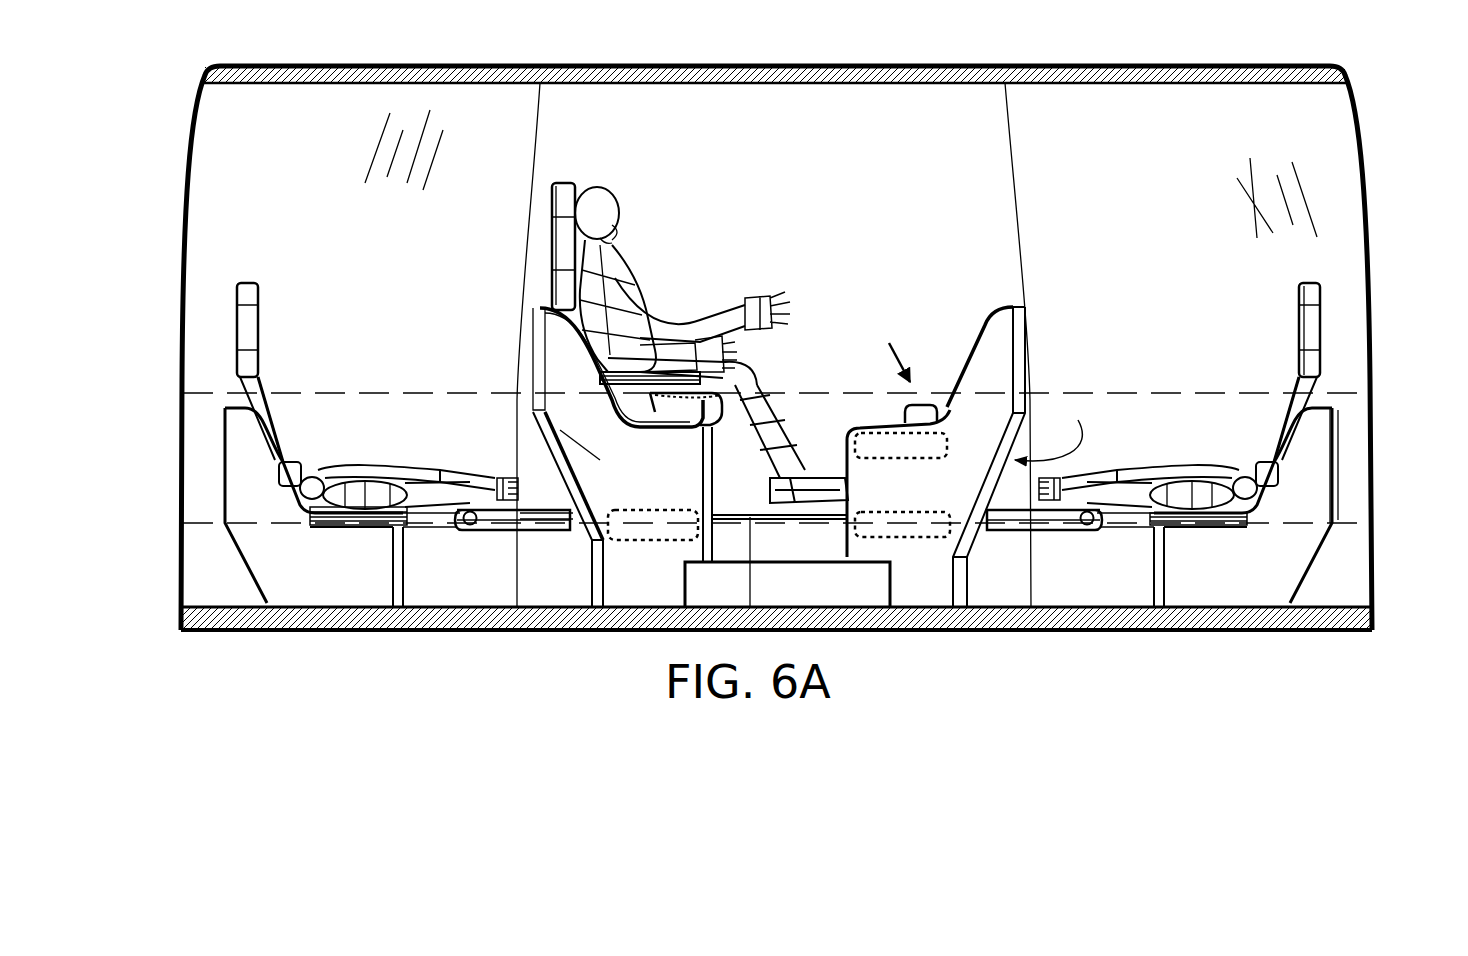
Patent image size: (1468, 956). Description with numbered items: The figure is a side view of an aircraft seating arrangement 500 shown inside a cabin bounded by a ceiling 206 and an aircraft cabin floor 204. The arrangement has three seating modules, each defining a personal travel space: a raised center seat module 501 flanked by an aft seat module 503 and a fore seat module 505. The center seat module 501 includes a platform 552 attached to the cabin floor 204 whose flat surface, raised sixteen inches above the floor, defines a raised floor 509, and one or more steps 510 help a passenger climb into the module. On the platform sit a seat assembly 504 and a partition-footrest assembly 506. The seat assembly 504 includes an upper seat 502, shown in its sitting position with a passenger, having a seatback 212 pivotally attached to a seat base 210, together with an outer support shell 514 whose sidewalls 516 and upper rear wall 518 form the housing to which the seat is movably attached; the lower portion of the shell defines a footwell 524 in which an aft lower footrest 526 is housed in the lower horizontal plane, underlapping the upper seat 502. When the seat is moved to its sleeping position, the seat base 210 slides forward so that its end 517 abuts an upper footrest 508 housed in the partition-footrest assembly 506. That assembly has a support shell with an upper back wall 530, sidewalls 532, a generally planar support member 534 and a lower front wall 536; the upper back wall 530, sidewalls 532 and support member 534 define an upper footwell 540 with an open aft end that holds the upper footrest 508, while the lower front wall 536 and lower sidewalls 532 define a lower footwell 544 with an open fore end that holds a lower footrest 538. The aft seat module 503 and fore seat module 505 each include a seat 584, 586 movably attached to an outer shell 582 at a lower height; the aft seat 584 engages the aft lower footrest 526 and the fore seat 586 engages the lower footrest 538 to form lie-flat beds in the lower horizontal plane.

The seating arrangement 500 is at (1043, 155).
The ceiling 206 is at (357, 83).
The aircraft cabin floor 204 is at (421, 603).
The raised center seat module 501 is at (758, 252).
The upper seat 502 is at (545, 193).
The seatback 212 is at (555, 258).
The seat assembly 504 is at (537, 298).
The upper rear wall 518 is at (543, 333).
The sidewalls 516 is at (556, 405).
The outer support shell 514 is at (575, 432).
The footwell 524 is at (597, 450).
The end 517 is at (722, 428).
The seat base 210 is at (683, 418).
The raised floor 509 is at (718, 512).
The steps 510 is at (880, 590).
The aft lower footrest 526 is at (618, 522).
The partition-footrest assembly 506 is at (1010, 300).
The upper back wall 530 is at (1030, 375).
The sidewalls 532 is at (990, 358).
The upper footrest 508 is at (937, 445).
The generally planar support member 534 is at (884, 426).
The lower front wall 536 is at (849, 478).
The lower footrest 538 is at (884, 522).
The upper footwell 540 is at (889, 350).
The lower footwell 544 is at (1059, 428).
The platform 552 is at (806, 540).
The aft seat module 503 is at (232, 315).
The aft seat 584 is at (278, 366).
The fore seat module 505 is at (1225, 312).
The fore seat 586 is at (1293, 297).
The outer shell 582 is at (1318, 500).